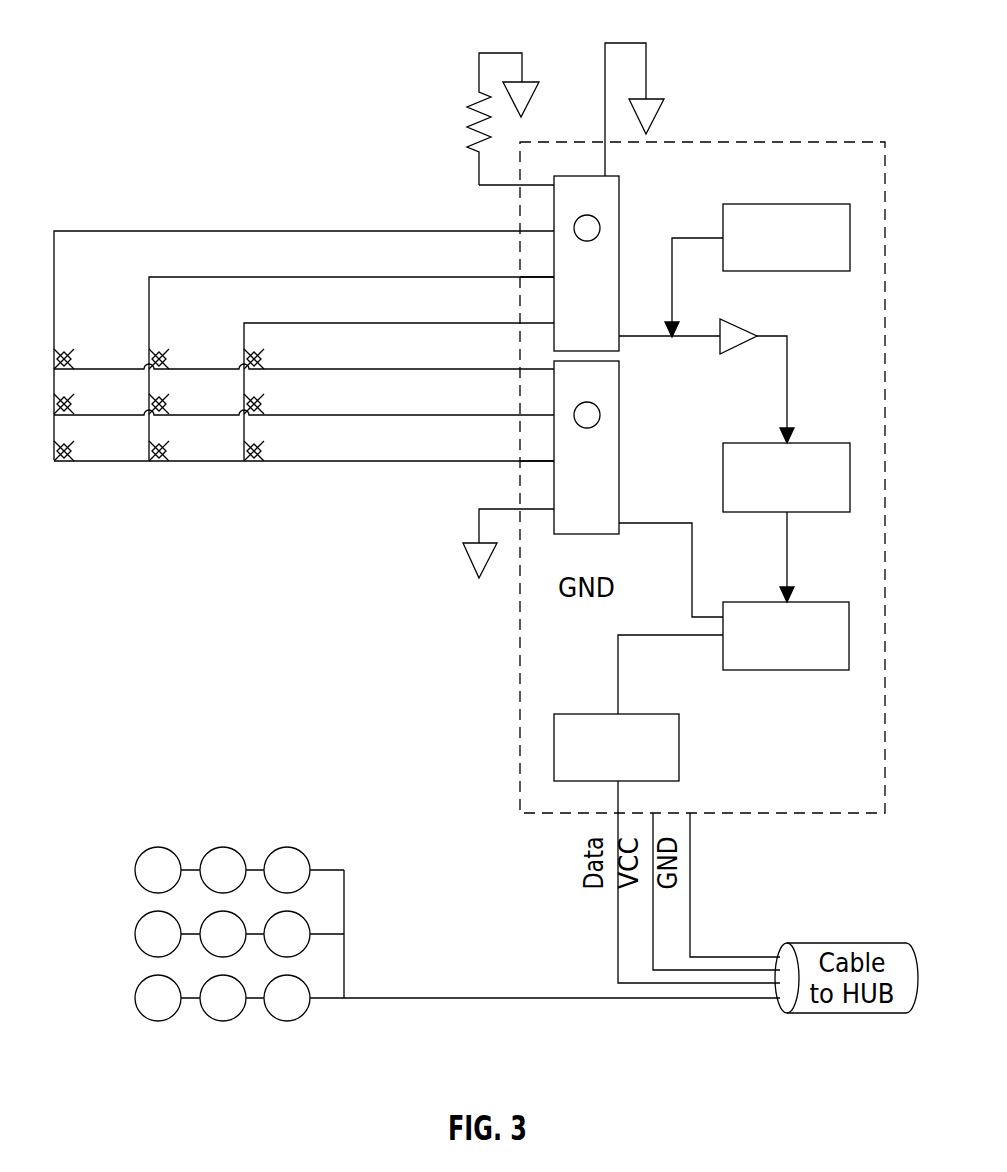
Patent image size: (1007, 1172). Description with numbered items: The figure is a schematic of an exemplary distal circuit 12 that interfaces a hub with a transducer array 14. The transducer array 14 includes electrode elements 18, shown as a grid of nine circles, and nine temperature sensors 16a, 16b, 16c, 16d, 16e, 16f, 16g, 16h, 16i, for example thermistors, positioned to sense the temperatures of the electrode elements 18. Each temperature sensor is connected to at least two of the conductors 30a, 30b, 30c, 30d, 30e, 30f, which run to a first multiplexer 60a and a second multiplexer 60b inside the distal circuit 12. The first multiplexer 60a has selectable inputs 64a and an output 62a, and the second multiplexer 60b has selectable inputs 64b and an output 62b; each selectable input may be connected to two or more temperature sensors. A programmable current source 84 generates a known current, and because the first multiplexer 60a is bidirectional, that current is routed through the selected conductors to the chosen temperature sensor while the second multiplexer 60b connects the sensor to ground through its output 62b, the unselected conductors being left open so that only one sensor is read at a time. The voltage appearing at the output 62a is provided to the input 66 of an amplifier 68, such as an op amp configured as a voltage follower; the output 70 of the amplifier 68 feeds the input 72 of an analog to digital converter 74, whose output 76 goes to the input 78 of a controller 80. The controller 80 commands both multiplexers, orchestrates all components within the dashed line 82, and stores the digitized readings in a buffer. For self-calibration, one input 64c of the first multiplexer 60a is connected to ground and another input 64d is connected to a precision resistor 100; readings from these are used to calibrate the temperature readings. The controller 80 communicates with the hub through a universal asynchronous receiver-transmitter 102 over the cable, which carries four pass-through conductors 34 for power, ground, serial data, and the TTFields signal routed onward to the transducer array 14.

The distal circuit 12 is at (794, 54).
The transducer array 14 is at (247, 61).
The temperature sensor 16a is at (73, 350).
The temperature sensor 16b is at (168, 350).
The temperature sensor 16c is at (263, 350).
The temperature sensor 16d is at (73, 395).
The temperature sensor 16e is at (168, 395).
The temperature sensor 16f is at (263, 395).
The temperature sensor 16g is at (73, 442).
The temperature sensor 16h is at (168, 442).
The temperature sensor 16i is at (263, 442).
The electrode element 18 is at (287, 847).
The conductor 30a is at (375, 231).
The conductor 30b is at (375, 277).
The conductor 30c is at (375, 323).
The conductor 30d is at (375, 369).
The conductor 30e is at (375, 415).
The conductor 30f is at (375, 461).
The pass-through conductor 34 is at (483, 997).
The first multiplexer 60a is at (620, 195).
The second multiplexer 60b is at (620, 500).
The output of first multiplexer 62a is at (619, 345).
The output of second multiplexer 62b is at (553, 507).
The selectable input of first multiplexer 64a is at (533, 277).
The selectable input of second multiplexer 64b is at (536, 461).
The grounded input 64c is at (632, 43).
The resistor input 64d is at (535, 185).
The amplifier input 66 is at (718, 343).
The amplifier 68 is at (729, 321).
The amplifier output 70 is at (760, 333).
The ADC input 72 is at (778, 443).
The analog to digital converter 74 is at (797, 443).
The ADC output 76 is at (785, 513).
The controller input 78 is at (778, 602).
The controller 80 is at (797, 602).
The dashed line 82 is at (835, 142).
The programmable current source 84 is at (798, 204).
The precision resistor 100 is at (468, 97).
The universal asynchronous receiver-transmitter 102 is at (638, 714).